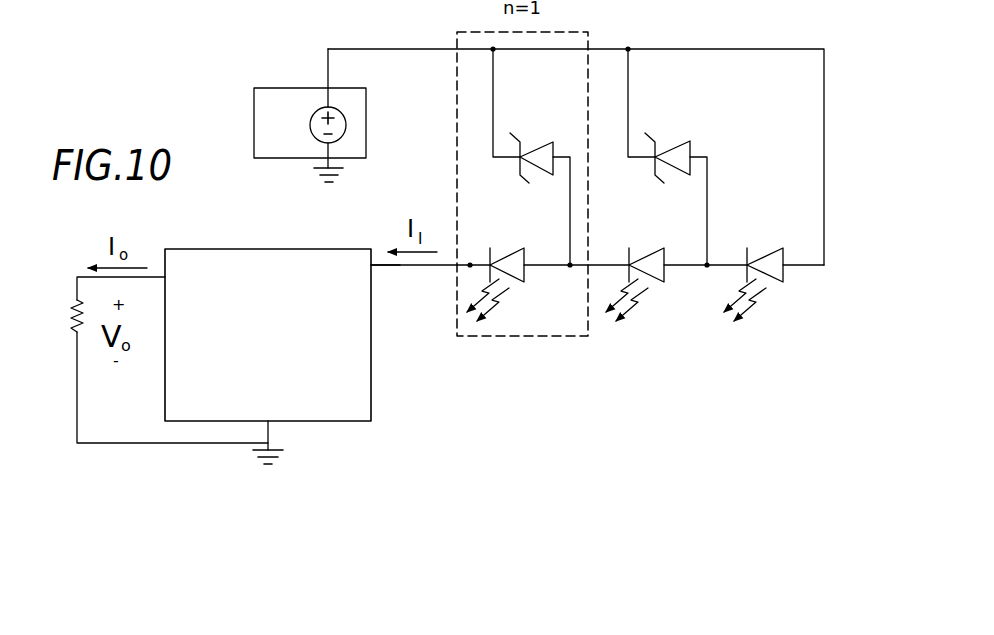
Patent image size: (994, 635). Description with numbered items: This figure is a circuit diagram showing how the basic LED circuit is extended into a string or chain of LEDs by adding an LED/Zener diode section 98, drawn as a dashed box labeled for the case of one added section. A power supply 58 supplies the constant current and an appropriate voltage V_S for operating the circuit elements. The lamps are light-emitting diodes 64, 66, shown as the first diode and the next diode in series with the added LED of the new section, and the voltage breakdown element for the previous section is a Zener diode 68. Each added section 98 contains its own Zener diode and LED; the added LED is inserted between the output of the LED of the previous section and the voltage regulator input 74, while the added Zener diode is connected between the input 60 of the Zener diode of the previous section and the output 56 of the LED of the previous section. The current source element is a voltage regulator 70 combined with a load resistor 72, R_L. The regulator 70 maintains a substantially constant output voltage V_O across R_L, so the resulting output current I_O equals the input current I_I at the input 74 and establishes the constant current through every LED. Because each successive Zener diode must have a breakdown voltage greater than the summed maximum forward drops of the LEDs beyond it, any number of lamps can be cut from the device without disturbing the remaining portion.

The power supply 58 is at (254, 117).
The input of the Zener diode 60 is at (628, 85).
The Zener diode 68 is at (691, 151).
The LED/Zener diode section 98 is at (545, 336).
The output of the LED 56 is at (596, 267).
The light-emitting diode 66 is at (667, 277).
The light-emitting diode 64 is at (784, 274).
The input 74 is at (371, 268).
The voltage regulator 70 is at (371, 397).
The load resistor 72 is at (77, 307).